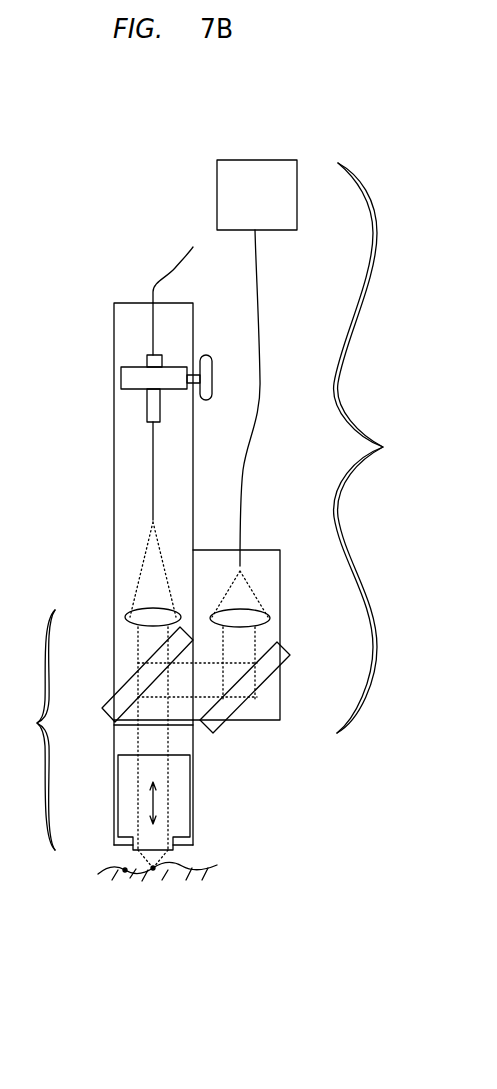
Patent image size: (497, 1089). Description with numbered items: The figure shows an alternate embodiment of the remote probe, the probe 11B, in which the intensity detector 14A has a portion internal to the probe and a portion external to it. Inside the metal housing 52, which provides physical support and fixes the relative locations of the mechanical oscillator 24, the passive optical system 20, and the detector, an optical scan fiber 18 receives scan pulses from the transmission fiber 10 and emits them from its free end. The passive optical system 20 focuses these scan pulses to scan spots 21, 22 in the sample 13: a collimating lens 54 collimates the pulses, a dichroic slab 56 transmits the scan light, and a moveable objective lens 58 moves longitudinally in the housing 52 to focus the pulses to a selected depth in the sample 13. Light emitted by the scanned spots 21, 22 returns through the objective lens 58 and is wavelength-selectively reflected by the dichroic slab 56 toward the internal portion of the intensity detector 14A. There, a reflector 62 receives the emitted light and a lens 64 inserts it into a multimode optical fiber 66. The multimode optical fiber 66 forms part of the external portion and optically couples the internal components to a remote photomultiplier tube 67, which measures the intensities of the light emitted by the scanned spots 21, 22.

The transmission fiber 10 is at (166, 283).
The probe 11B is at (65, 450).
The sample 13 is at (184, 870).
The intensity detector 14A is at (381, 448).
The optical scan fiber 18 is at (156, 474).
The passive optical system 20 is at (31, 730).
The scan spot 21 is at (153, 870).
The scan spot 22 is at (125, 872).
The mechanical oscillator 24 is at (148, 421).
The metal housing 52 is at (114, 575).
The collimating lens 54 is at (178, 612).
The dichroic slab 56 is at (103, 709).
The moveable objective lens 58 is at (118, 810).
The reflector 62 is at (212, 734).
The lens 64 is at (265, 612).
The multimode optical fiber 66 is at (252, 436).
The remote photomultiplier tube 67 is at (297, 222).